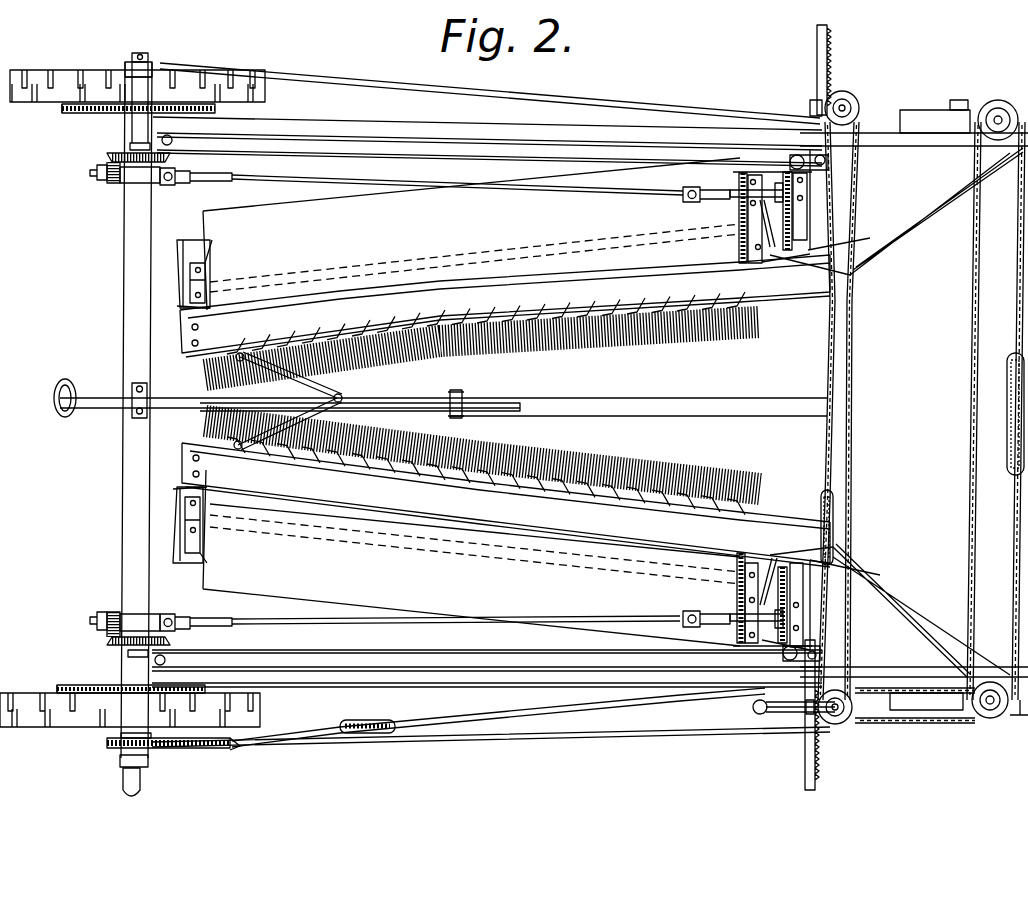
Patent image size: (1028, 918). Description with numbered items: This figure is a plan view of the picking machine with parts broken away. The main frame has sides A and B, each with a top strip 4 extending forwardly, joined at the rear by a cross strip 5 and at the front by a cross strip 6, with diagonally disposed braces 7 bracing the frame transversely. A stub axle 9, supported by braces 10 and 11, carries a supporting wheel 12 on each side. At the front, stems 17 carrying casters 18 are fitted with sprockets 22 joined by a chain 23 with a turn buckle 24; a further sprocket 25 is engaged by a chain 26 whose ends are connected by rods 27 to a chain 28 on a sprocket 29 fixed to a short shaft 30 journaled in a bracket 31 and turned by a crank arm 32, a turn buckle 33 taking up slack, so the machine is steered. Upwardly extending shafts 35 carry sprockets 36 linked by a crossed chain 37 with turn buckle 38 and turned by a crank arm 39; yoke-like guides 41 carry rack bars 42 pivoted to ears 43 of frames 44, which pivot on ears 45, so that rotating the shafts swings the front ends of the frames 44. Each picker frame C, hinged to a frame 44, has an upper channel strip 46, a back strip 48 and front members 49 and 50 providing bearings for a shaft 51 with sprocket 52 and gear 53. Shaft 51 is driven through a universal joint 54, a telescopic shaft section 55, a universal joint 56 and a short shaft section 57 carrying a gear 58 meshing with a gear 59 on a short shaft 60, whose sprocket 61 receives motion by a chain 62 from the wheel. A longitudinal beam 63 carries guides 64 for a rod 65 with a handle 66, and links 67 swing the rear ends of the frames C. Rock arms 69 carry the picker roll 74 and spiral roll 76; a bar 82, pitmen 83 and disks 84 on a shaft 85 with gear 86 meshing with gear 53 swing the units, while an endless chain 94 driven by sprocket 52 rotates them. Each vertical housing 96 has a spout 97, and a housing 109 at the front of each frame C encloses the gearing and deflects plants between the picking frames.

The top strip 4 is at (910, 135).
The cross strip 5 is at (126, 462).
The cross strip 6 is at (852, 380).
The diagonally disposed braces 7 is at (905, 220).
The stub axle 9 is at (142, 52).
The brace 10 is at (150, 70).
The brace 11 is at (540, 100).
The supporting wheel 12 is at (40, 80).
The stem 17 is at (1000, 118).
The caster 18 is at (940, 110).
The sprocket 22 is at (995, 100).
The chain 23 is at (1010, 558).
The turn buckle 24 is at (1005, 403).
The sprocket 25 is at (1000, 720).
The chain 26 is at (930, 725).
The rods 27 is at (722, 732).
The chain 28 is at (228, 748).
The sprocket 29 is at (122, 752).
The short shaft 30 is at (150, 750).
The bracket 31 is at (120, 765).
The crank arm 32 is at (142, 785).
The turn buckle 33 is at (345, 728).
The upwardly extending shaft 35 is at (845, 100).
The sprocket 36 is at (858, 105).
The crossed chain 37 is at (815, 645).
The turn buckle 38 is at (835, 500).
The crank arm 39 is at (760, 714).
The yoke-like guide 41 is at (808, 106).
The rack bar 42 is at (817, 45).
The ear 43 is at (810, 170).
The frame 44 is at (305, 142).
The ear 45 is at (130, 133).
The upper channel strip 46 is at (515, 270).
The back strip 48 is at (205, 268).
The front member 49 is at (818, 230).
The front member 50 is at (755, 262).
The shaft 51 is at (790, 172).
The sprocket 52 is at (797, 172).
The gear 53 is at (742, 190).
The universal joint 54 is at (688, 202).
The telescopic shaft section 55 is at (537, 190).
The universal joint 56 is at (190, 184).
The short shaft section 57 is at (152, 183).
The gear 58 is at (92, 178).
The gear 59 is at (108, 157).
The short shaft 60 is at (132, 68).
The sprocket 61 is at (180, 104).
The chain 62 is at (64, 112).
The longitudinal beam 63 is at (672, 386).
The guide 64 is at (462, 395).
The rod 65 is at (408, 402).
The handle 66 is at (68, 380).
The link 67 is at (345, 398).
The rock arm 69 is at (205, 262).
The picker roll 74 is at (560, 358).
The spiral roll 76 is at (625, 340).
The bar 82 is at (190, 280).
The pitman 83 is at (178, 296).
The disk 84 is at (178, 278).
The shaft 85 is at (414, 262).
The gear 86 is at (738, 250).
The endless chain 94 is at (850, 262).
The vertical housing 96 is at (435, 282).
The spout 97 is at (400, 200).
The housing 109 is at (940, 225).
The side of main frame A is at (623, 694).
The side of main frame B is at (607, 118).
The picker frame C is at (710, 478).